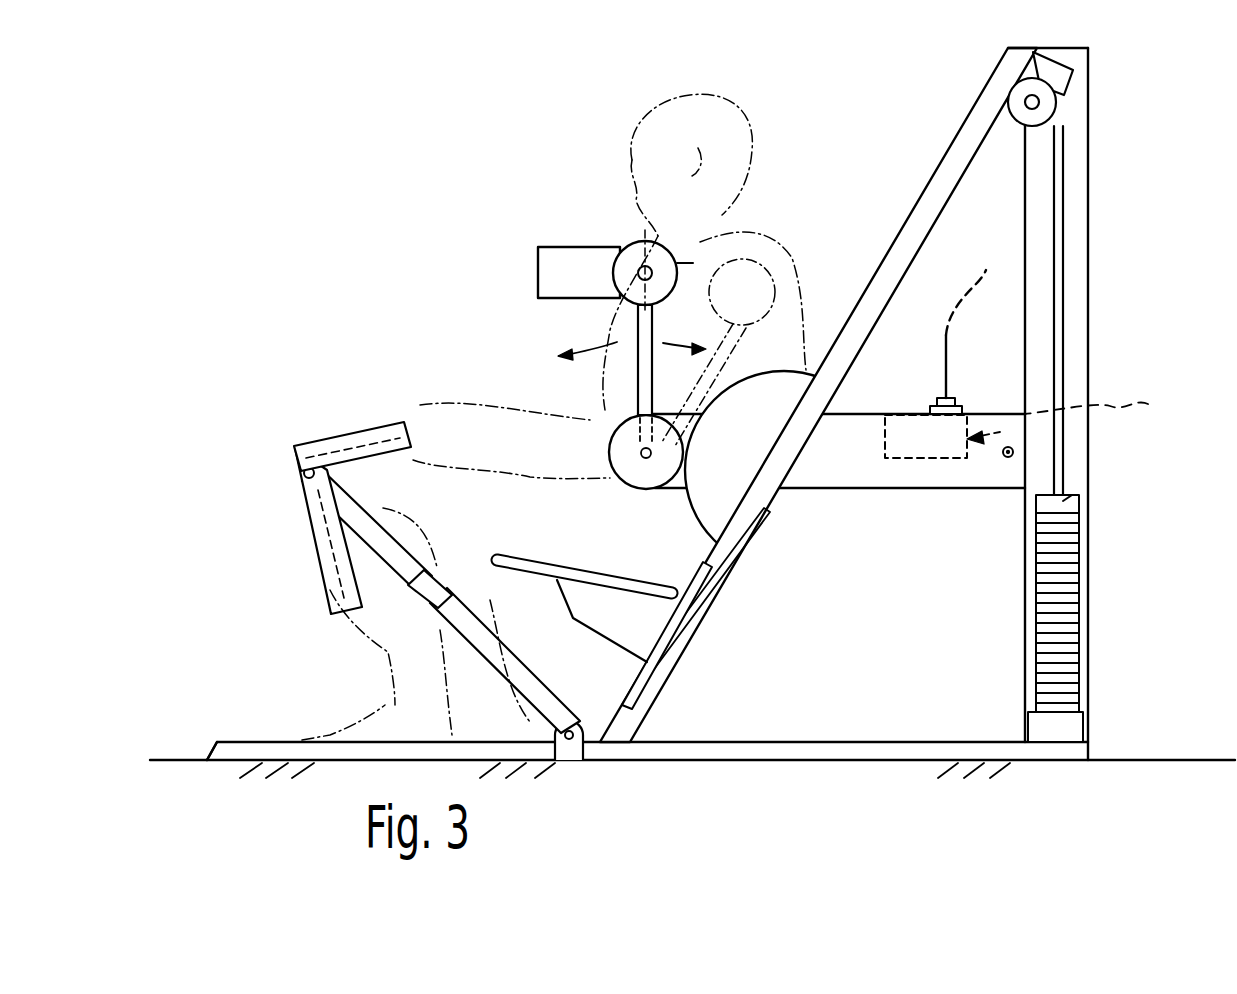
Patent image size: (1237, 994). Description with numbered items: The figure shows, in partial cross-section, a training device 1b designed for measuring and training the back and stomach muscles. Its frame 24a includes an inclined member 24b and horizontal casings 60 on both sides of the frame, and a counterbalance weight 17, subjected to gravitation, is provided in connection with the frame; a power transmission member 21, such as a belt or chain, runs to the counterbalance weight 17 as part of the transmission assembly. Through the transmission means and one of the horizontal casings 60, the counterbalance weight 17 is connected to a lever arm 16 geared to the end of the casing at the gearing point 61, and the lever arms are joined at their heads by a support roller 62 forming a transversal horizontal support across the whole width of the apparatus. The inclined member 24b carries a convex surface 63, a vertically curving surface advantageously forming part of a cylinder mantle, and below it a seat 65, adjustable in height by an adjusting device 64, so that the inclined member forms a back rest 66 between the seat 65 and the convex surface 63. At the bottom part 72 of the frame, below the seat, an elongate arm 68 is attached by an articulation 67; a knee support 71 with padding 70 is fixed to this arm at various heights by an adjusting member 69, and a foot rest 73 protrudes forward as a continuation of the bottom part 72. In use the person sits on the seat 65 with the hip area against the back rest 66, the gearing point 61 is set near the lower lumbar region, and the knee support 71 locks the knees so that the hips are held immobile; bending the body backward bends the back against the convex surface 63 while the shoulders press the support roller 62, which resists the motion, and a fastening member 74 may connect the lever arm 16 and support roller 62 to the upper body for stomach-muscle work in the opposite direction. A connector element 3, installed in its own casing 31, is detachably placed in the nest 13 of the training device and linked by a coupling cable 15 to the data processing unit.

The training device 1b is at (298, 254).
The connector element 3 is at (918, 385).
The nest 13 is at (1105, 405).
The coupling cable 15 is at (955, 326).
The lever arm 16 is at (652, 370).
The counterbalance weight 17 is at (1086, 494).
The power transmission member 21 is at (1090, 150).
The frame 24a is at (1090, 238).
The inclined member 24b is at (986, 98).
The casing 31 is at (905, 410).
The horizontal casing 60 is at (900, 489).
The gearing point 61 is at (610, 418).
The support roller 62 is at (690, 242).
The convex surface 63 is at (775, 372).
The adjusting device 64 is at (658, 678).
The seat 65 is at (548, 568).
The back rest 66 is at (710, 553).
The articulation 67 is at (578, 718).
The elongate arm 68 is at (492, 642).
The adjusting member 69 is at (462, 570).
The padding 70 is at (345, 432).
The knee support 71 is at (294, 484).
The bottom part of the frame 72 is at (770, 762).
The foot rest 73 is at (243, 748).
The fastening member 74 is at (600, 246).